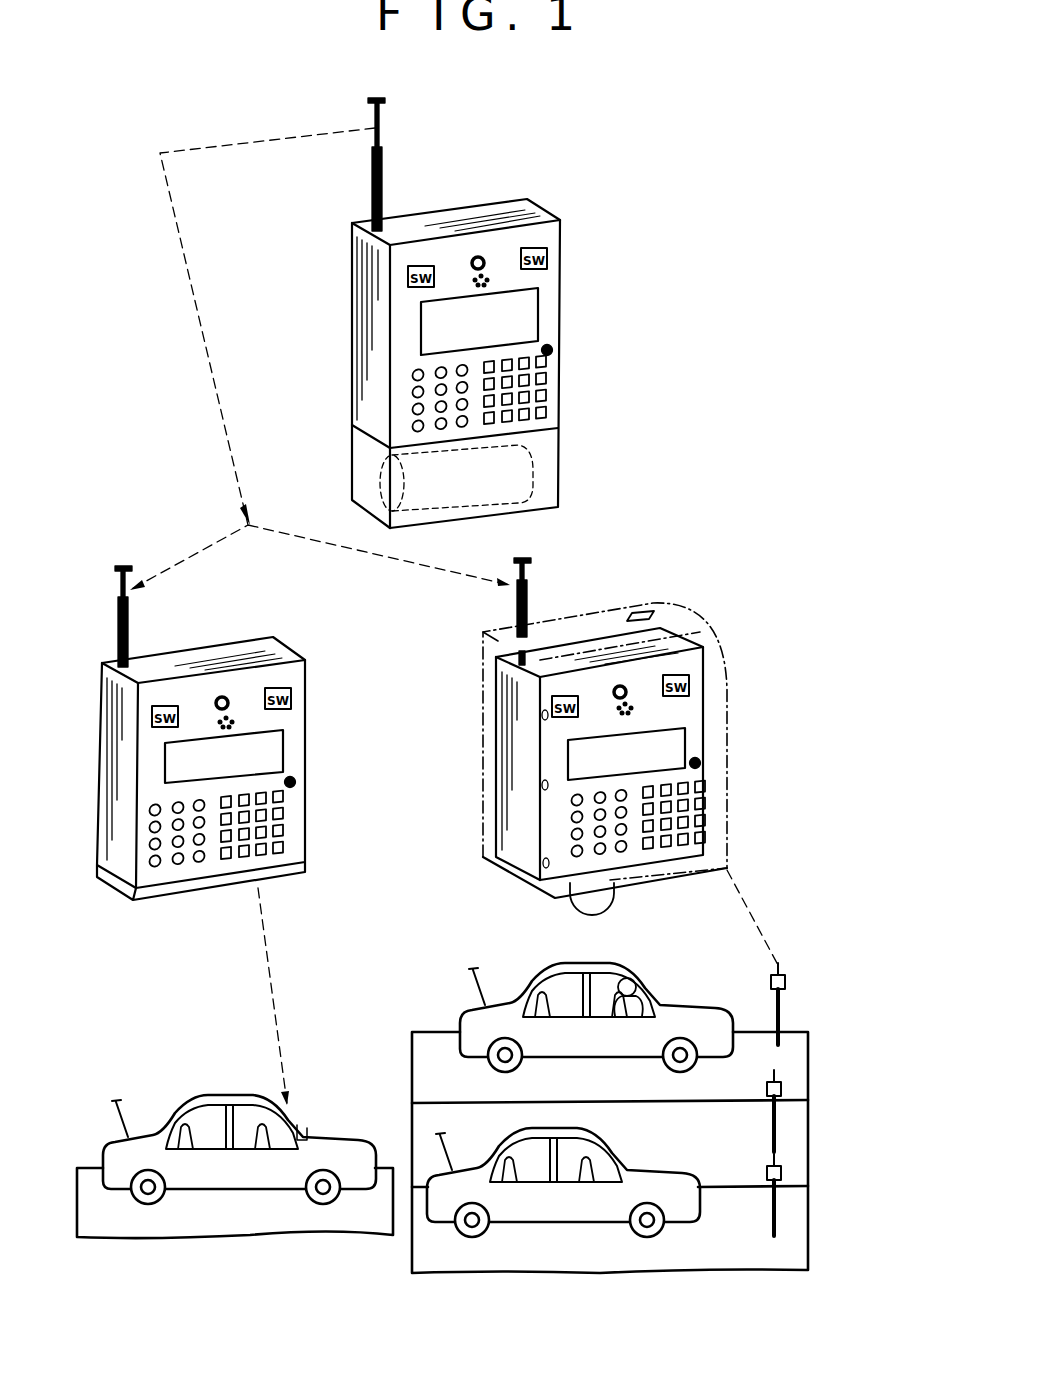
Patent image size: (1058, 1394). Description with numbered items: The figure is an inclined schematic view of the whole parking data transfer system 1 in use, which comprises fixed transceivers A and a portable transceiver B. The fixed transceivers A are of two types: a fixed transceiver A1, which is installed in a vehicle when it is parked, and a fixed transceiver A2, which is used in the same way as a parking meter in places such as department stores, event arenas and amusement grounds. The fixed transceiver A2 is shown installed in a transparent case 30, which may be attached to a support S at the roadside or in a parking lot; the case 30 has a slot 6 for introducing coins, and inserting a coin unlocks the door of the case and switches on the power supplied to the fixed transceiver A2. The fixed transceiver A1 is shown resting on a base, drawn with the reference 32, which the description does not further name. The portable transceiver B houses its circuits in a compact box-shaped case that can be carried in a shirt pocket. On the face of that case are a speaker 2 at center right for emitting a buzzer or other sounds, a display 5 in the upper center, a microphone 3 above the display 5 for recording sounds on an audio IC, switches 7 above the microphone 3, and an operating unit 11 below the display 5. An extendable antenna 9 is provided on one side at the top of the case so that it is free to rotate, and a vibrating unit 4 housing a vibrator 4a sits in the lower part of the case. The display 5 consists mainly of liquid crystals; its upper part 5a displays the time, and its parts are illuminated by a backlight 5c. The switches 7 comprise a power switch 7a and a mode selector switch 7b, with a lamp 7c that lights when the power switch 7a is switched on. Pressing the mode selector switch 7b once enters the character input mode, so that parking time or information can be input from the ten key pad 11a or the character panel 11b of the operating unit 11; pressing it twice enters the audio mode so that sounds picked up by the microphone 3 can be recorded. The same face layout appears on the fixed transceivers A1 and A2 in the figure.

The parking data transfer system 1 is at (140, 392).
The portable transceiver B is at (405, 207).
The fixed transceivers A is at (300, 929).
The fixed transceiver A1 is at (172, 650).
The fixed transceiver A2 is at (565, 625).
The speaker 2 is at (552, 352).
The microphone 3 is at (492, 282).
The vibrating unit 4 is at (560, 473).
The vibrator 4a is at (380, 475).
The display 5 is at (545, 316).
The upper part 5a is at (540, 297).
The backlight 5c is at (540, 335).
The slot 6 is at (655, 612).
The switches 7 is at (455, 262).
The power switch 7a is at (408, 280).
The mode selector switch 7b is at (548, 256).
The lamp 7c is at (485, 257).
The extendable antenna 9 is at (382, 120).
The operating unit 11 is at (565, 404).
The ten key pad 11a is at (416, 410).
The character panel 11b is at (546, 418).
The transparent case 30 is at (720, 826).
The base plate 32 is at (114, 893).
The support S is at (613, 905).